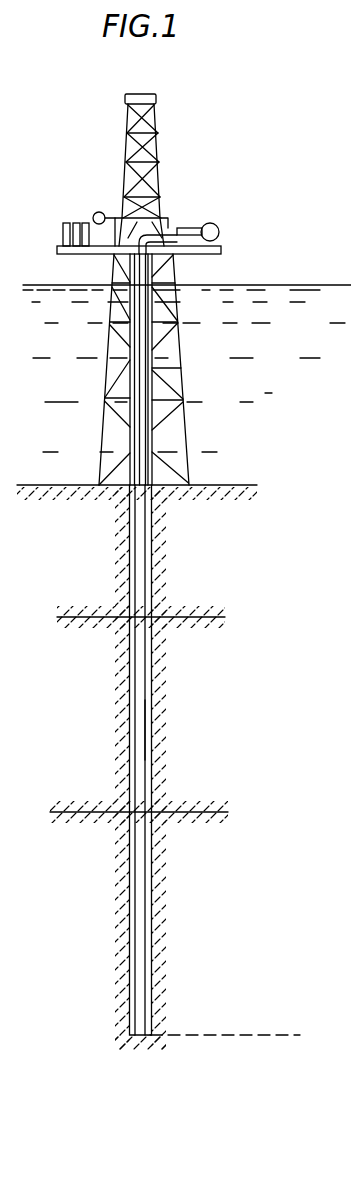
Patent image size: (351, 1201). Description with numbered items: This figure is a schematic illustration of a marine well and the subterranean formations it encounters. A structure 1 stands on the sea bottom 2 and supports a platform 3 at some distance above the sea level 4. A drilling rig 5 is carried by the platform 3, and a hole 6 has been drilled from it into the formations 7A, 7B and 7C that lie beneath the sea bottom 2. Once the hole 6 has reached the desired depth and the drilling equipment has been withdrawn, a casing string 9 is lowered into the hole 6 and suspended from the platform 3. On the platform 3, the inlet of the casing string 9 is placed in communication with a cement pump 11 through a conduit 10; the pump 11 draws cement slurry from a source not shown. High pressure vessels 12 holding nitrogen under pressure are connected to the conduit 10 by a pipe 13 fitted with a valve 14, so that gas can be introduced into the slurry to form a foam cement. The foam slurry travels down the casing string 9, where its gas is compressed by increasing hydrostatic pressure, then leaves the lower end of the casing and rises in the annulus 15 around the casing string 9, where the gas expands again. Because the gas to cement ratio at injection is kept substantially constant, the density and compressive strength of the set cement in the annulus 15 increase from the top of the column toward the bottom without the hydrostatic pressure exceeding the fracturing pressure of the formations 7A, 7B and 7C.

The structure 1 is at (182, 367).
The sea bottom 2 is at (233, 485).
The platform 3 is at (221, 250).
The sea level 4 is at (300, 284).
The drilling rig 5 is at (157, 140).
The hole 6 is at (152, 660).
The formation 7A is at (141, 588).
The formation 7B is at (148, 773).
The formation 7C is at (225, 966).
The casing string 9 is at (147, 775).
The conduit 10 is at (170, 238).
The cement pump 11 is at (217, 226).
The high pressure vessels 12 is at (62, 233).
The pipe 13 is at (128, 217).
The valve 14 is at (100, 212).
The annulus 15 is at (148, 718).